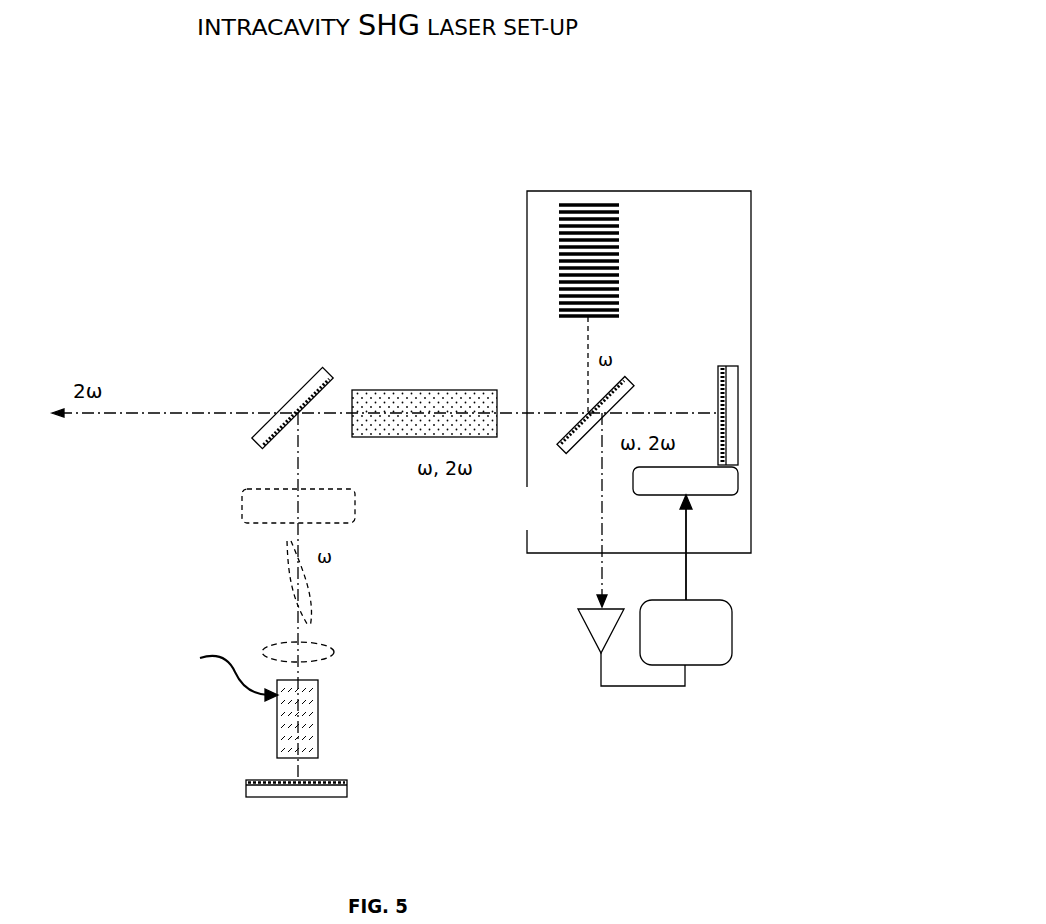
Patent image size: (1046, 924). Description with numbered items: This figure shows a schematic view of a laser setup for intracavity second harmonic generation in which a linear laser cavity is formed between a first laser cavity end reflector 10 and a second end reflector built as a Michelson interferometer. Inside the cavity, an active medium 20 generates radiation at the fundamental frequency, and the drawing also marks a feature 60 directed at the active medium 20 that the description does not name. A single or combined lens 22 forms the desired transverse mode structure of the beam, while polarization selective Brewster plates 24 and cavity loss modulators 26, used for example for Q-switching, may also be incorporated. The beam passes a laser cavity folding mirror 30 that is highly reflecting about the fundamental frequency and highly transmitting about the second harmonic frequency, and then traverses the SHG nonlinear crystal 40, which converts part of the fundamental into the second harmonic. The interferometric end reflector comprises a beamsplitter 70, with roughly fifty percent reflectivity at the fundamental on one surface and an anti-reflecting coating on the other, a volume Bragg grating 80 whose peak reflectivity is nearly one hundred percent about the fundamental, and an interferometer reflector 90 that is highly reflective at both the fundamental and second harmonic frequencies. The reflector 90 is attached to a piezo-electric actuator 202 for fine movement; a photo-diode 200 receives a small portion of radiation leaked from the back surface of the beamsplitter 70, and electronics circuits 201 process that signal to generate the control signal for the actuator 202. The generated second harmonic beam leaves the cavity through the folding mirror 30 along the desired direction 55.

The first laser cavity end reflector 10 is at (257, 780).
The active medium 20 is at (318, 742).
The lens 22 is at (278, 642).
The Brewster plates 24 is at (322, 592).
The cavity loss modulators 26 is at (355, 508).
The laser cavity folding mirror 30 is at (310, 383).
The SHG nonlinear crystal 40 is at (485, 390).
The desired direction 55 is at (132, 422).
The pump light 60 is at (200, 658).
The beamsplitter 70 is at (600, 427).
The volume Bragg grating 80 is at (619, 265).
The interferometer reflector 90 is at (738, 428).
The photo-diode 200 is at (619, 647).
The electronics circuits 201 is at (686, 580).
The piezo-electric actuator 202 is at (725, 495).